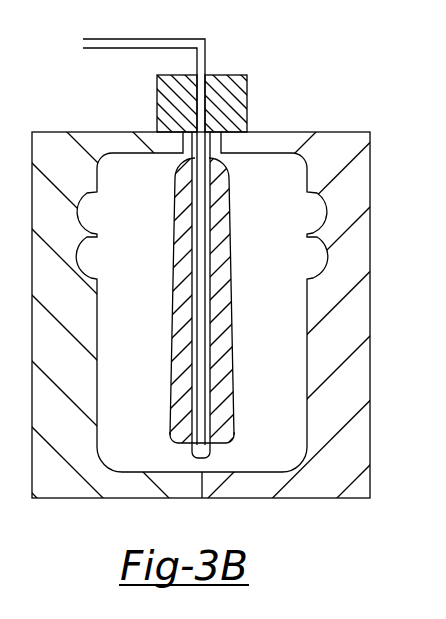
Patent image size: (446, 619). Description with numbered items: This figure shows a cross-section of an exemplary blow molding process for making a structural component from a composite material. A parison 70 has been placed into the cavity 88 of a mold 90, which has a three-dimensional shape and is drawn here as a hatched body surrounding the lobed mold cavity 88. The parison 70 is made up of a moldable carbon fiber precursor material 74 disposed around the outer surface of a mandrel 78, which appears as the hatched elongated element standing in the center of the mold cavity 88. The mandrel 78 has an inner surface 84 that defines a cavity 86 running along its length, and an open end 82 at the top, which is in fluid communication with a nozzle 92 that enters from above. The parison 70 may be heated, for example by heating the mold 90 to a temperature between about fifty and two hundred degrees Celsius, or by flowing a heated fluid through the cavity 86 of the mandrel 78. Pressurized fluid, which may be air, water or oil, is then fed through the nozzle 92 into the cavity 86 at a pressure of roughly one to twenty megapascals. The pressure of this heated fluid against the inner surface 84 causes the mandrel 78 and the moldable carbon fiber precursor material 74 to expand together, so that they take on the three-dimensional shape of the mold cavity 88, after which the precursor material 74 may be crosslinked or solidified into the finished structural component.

The parison 70 is at (230, 320).
The moldable carbon fiber precursor material 74 is at (175, 408).
The mandrel 78 is at (192, 394).
The open end 82 is at (208, 148).
The inner surface 84 is at (208, 328).
The cavity 86 is at (207, 283).
The cavity 88 is at (277, 193).
The mold 90 is at (352, 150).
The nozzle 92 is at (203, 185).